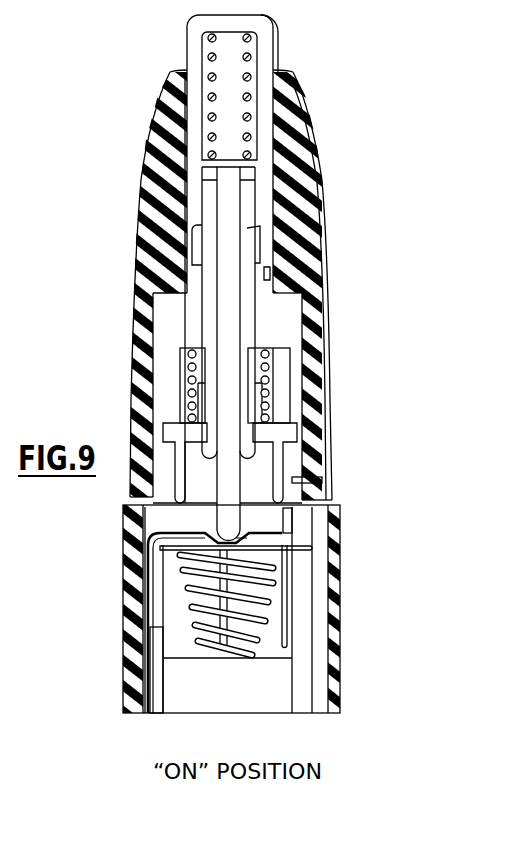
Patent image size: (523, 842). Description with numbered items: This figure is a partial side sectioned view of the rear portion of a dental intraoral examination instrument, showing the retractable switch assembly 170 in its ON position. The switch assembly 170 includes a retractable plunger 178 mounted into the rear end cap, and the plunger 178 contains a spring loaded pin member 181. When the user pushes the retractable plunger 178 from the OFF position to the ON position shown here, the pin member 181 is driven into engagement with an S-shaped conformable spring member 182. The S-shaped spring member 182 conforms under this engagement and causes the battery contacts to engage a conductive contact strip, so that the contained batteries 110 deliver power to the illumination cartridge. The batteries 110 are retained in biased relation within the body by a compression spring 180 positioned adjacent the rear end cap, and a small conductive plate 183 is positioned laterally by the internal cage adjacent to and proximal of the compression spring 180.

The switch assembly 170 is at (352, 317).
The retractable plunger 178 is at (277, 50).
The pin member 181 is at (225, 277).
The S-shaped conformable spring member 182 is at (150, 533).
The conductive plate 183 is at (312, 549).
The compression spring 180 is at (190, 607).
The batteries 110 is at (232, 693).